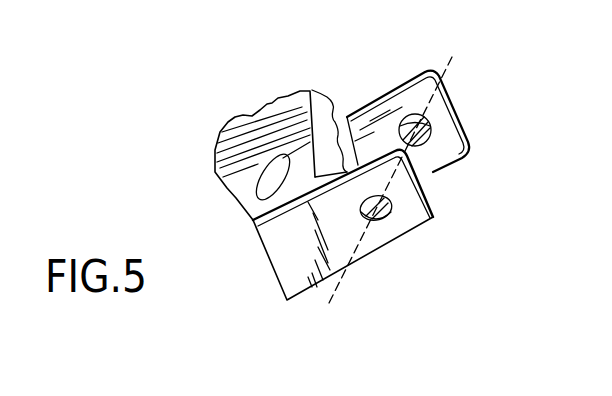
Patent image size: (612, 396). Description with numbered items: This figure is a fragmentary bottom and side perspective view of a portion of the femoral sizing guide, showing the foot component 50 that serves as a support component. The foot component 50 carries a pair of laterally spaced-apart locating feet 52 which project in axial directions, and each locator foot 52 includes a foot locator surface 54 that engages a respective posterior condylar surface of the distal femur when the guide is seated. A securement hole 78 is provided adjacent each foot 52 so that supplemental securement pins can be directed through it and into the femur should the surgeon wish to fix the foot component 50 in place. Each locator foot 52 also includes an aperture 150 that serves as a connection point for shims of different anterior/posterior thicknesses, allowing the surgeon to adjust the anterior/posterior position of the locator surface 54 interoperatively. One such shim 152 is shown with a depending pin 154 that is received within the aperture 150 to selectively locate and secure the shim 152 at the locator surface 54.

The foot component 50 is at (250, 232).
The locating foot 52 is at (394, 247).
The foot locator surface 54 is at (430, 172).
The securement hole 78 is at (265, 183).
The aperture 150 is at (392, 208).
The shim 152 is at (440, 73).
The depending pin 154 is at (433, 128).